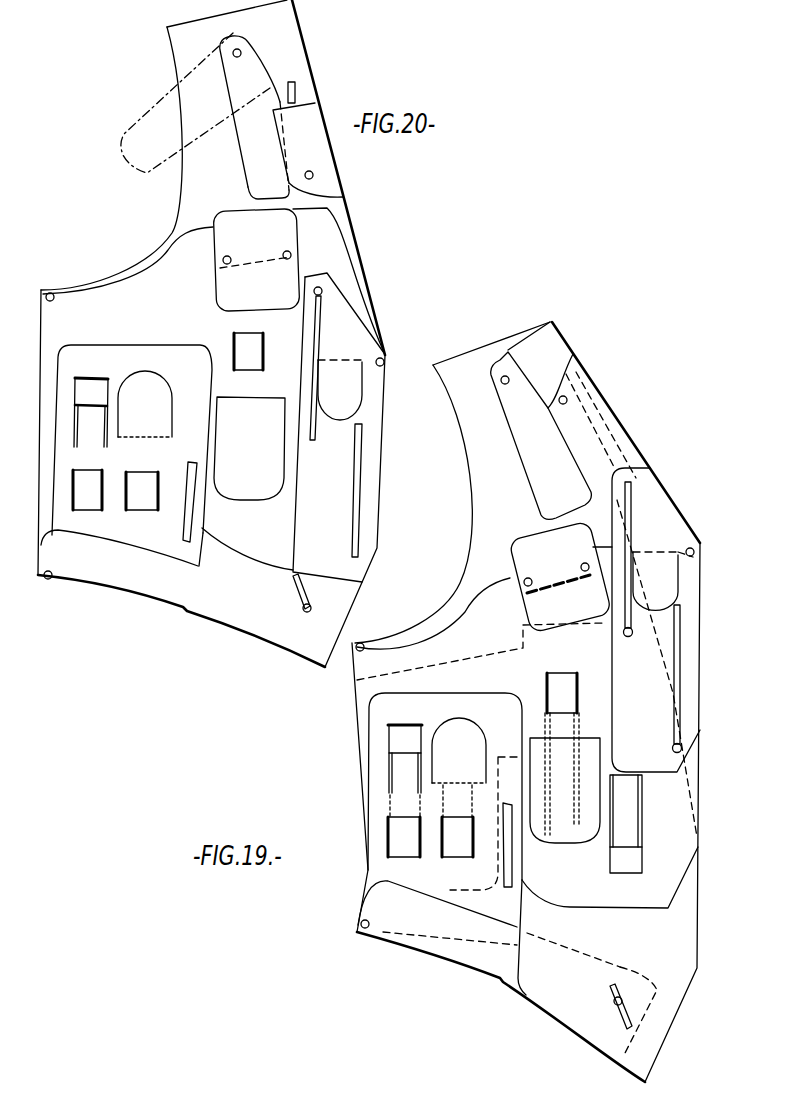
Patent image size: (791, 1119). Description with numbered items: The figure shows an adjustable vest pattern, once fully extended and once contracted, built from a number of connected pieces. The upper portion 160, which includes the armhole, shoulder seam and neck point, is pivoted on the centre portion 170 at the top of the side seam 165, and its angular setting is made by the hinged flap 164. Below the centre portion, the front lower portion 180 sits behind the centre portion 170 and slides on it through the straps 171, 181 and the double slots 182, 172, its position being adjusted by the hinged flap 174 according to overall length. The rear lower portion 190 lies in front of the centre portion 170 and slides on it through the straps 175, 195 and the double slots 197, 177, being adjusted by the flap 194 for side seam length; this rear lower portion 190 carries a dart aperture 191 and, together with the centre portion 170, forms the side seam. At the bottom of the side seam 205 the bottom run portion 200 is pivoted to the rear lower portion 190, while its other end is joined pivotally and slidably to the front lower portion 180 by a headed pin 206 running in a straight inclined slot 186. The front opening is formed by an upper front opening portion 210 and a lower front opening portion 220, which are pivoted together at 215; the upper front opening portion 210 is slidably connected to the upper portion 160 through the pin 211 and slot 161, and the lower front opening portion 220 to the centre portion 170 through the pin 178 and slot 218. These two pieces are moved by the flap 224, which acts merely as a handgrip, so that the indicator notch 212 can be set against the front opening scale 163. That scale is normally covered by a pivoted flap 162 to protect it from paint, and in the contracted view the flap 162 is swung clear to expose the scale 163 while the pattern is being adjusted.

In FIG. 19, the upper portion 160 is at (506, 503).
In FIG. 20, the upper portion 160 is at (206, 53).
In FIG. 19, the slot 161 is at (612, 428).
In FIG. 19, the pivoted flap 162 is at (564, 483).
In FIG. 20, the pivoted flap 162 is at (250, 178).
In FIG. 20, the front opening scale 163 is at (243, 147).
In FIG. 19, the hinged flap 164 is at (564, 566).
In FIG. 20, the hinged flap 164 is at (264, 256).
In FIG. 19, the top of the side seam 165 is at (360, 641).
In FIG. 20, the top of the side seam 165 is at (46, 270).
In FIG. 19, the centre portion 170 is at (499, 636).
In FIG. 20, the centre portion 170 is at (151, 323).
In FIG. 19, the strap 171 is at (632, 827).
In FIG. 19, the double slot 172 is at (550, 697).
In FIG. 19, the hinged flap 174 is at (560, 812).
In FIG. 20, the hinged flap 174 is at (261, 476).
In FIG. 19, the strap 175 is at (460, 850).
In FIG. 20, the strap 175 is at (142, 504).
In FIG. 19, the double slot 177 is at (405, 748).
In FIG. 19, the pin 178 is at (627, 638).
In FIG. 19, the front lower portion 180 is at (568, 985).
In FIG. 20, the front lower portion 180 is at (271, 593).
In FIG. 19, the strap 181 is at (560, 683).
In FIG. 19, the double slot 182 is at (623, 851).
In FIG. 19, the straight inclined slot 186 is at (617, 985).
In FIG. 19, the rear lower portion 190 is at (513, 725).
In FIG. 20, the rear lower portion 190 is at (198, 380).
In FIG. 20, the dart aperture 191 is at (191, 523).
In FIG. 19, the flap 194 is at (474, 753).
In FIG. 20, the flap 194 is at (161, 416).
In FIG. 19, the strap 195 is at (402, 767).
In FIG. 20, the strap 195 is at (94, 440).
In FIG. 19, the double slot 197 is at (467, 813).
In FIG. 19, the bottom run portion 200 is at (498, 970).
In FIG. 20, the bottom run portion 200 is at (144, 586).
In FIG. 19, the bottom of the side seam 205 is at (359, 923).
In FIG. 20, the bottom of the side seam 205 is at (48, 583).
In FIG. 19, the headed pin 206 is at (613, 1002).
In FIG. 20, the headed pin 206 is at (306, 612).
In FIG. 19, the upper front opening portion 210 is at (552, 366).
In FIG. 20, the upper front opening portion 210 is at (313, 163).
In FIG. 19, the pin 211 is at (567, 398).
In FIG. 19, the indicator notch 212 is at (569, 363).
In FIG. 20, the indicator notch 212 is at (340, 197).
In FIG. 19, the pivot 215 is at (689, 546).
In FIG. 20, the pivot 215 is at (386, 357).
In FIG. 19, the slot 218 is at (632, 500).
In FIG. 19, the lower front opening portion 220 is at (649, 758).
In FIG. 20, the lower front opening portion 220 is at (333, 523).
In FIG. 19, the flap 224 is at (638, 583).
In FIG. 20, the flap 224 is at (353, 396).